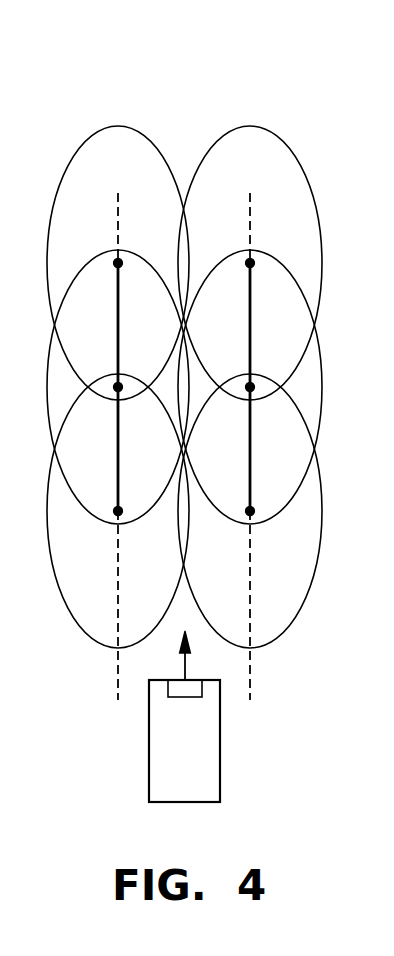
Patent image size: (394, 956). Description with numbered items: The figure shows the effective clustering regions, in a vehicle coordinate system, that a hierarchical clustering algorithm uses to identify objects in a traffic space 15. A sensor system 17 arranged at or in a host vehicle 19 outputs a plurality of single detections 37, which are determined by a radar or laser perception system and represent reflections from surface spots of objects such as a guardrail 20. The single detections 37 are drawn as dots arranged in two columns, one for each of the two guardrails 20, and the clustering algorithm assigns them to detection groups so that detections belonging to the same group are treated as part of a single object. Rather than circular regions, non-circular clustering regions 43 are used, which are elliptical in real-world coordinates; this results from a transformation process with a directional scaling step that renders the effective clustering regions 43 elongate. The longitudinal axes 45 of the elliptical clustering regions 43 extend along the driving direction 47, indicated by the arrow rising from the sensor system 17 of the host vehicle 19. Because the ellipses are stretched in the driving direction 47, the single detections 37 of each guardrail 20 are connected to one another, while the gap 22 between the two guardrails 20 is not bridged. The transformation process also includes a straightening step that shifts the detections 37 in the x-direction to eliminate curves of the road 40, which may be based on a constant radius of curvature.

The traffic space 15 is at (134, 109).
The gap 22 is at (188, 152).
The clustering region 43 is at (288, 143).
The single detection 37 is at (252, 262).
The longitudinal axis 45 is at (252, 440).
The guardrail 20 is at (118, 615).
The driving direction 47 is at (185, 663).
The sensor system 17 is at (180, 692).
The host vehicle 19 is at (213, 757).
The road 40 is at (195, 825).